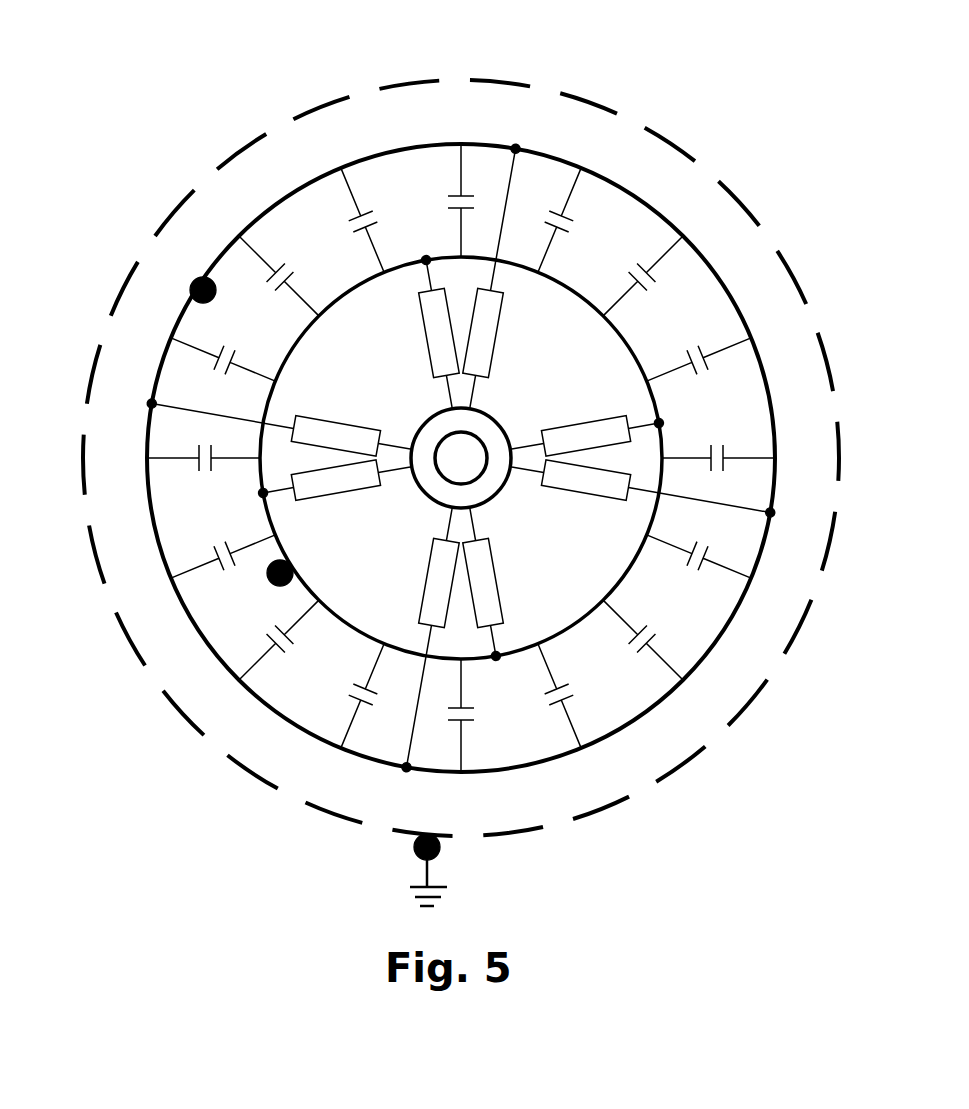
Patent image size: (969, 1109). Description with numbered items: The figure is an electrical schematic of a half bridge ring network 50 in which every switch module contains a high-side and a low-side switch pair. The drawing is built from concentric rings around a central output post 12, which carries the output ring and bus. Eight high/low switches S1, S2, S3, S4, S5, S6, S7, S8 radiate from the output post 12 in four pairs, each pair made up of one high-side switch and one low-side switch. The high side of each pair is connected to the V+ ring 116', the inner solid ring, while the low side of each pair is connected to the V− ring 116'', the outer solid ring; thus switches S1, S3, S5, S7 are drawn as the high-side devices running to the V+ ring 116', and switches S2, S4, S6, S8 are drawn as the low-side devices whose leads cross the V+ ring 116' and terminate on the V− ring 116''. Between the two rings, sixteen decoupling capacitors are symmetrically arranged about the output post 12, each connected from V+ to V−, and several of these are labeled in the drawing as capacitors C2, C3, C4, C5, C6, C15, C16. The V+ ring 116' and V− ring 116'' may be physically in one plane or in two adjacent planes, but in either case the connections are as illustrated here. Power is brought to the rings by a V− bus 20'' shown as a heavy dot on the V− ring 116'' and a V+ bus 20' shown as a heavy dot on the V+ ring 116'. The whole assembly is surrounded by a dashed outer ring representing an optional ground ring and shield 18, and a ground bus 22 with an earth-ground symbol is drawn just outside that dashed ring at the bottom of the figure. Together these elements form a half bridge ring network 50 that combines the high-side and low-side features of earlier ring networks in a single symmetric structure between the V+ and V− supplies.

The half bridge ring network 50 is at (267, 109).
The optional ground ring and shield 18 is at (688, 765).
The V+ ring 116' is at (461, 458).
The V− ring 116'' is at (461, 458).
The output post 12 is at (480, 485).
The V- bus 20'' is at (120, 269).
The V+ bus 20' is at (242, 599).
The ground bus 22 is at (438, 855).
The decoupling capacitor C2 is at (567, 220).
The decoupling capacitor C3 is at (645, 276).
The decoupling capacitor C4 is at (699, 366).
The decoupling capacitor C5 is at (718, 472).
The decoupling capacitor C6 is at (699, 562).
The decoupling capacitor C15 is at (282, 276).
The decoupling capacitor C16 is at (375, 220).
The high/low switch S1 is at (439, 332).
The high/low switch S2 is at (493, 276).
The high/low switch S3 is at (587, 436).
The high/low switch S4 is at (642, 490).
The high/low switch S5 is at (483, 584).
The high/low switch S6 is at (429, 639).
The high/low switch S7 is at (335, 480).
The high/low switch S8 is at (279, 426).